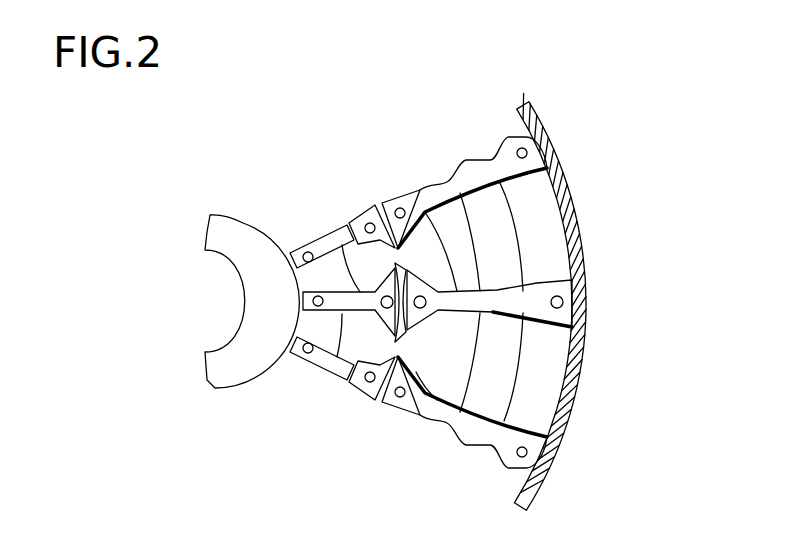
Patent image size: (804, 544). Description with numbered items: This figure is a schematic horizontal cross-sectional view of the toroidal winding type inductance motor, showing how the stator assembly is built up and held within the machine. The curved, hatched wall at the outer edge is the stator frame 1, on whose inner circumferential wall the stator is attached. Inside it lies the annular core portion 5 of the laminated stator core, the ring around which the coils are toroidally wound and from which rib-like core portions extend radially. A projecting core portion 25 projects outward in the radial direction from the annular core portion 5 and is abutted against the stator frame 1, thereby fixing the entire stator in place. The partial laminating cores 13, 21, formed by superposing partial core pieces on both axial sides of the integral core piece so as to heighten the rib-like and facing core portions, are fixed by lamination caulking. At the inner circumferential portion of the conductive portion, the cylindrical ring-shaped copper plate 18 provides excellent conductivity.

The stator frame 1 is at (570, 407).
The annular core portion 5 is at (502, 228).
The partial laminating core 13 is at (420, 192).
The cylindrical ring-shaped copper plate 18 is at (243, 234).
The partial laminating core 21 is at (354, 235).
The projecting core portion 25 is at (545, 284).